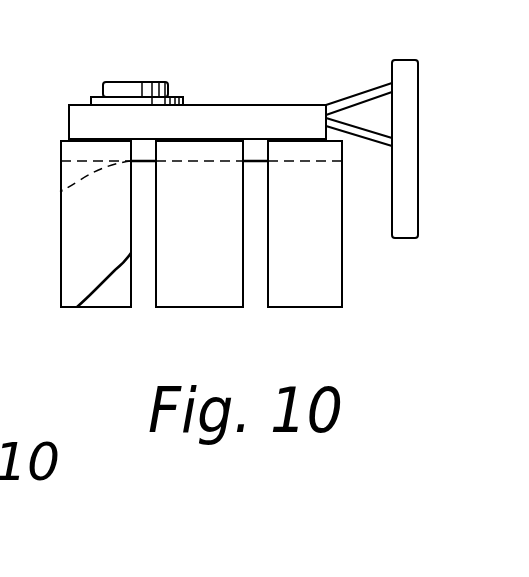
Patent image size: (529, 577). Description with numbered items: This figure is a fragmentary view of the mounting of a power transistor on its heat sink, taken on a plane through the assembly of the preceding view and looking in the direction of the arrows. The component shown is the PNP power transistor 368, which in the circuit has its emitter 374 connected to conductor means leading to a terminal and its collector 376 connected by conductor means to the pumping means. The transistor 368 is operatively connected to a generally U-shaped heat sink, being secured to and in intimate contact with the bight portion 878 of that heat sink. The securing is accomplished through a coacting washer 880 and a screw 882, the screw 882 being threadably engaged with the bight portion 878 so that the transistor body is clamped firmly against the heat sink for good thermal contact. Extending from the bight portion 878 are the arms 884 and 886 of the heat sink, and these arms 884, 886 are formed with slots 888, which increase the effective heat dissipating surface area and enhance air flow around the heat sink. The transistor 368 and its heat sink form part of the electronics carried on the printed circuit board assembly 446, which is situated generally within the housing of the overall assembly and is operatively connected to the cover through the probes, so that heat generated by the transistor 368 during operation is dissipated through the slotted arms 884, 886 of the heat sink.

The PNP power transistor 368 is at (255, 114).
The emitter 374 is at (350, 101).
The collector 376 is at (371, 136).
The printed circuit board assembly 446 is at (417, 18).
The bight portion 878 is at (73, 186).
The washer 880 is at (179, 99).
The screw 882 is at (154, 47).
The arm 884 is at (107, 292).
The arm 886 is at (85, 212).
The slots 888 is at (156, 288).